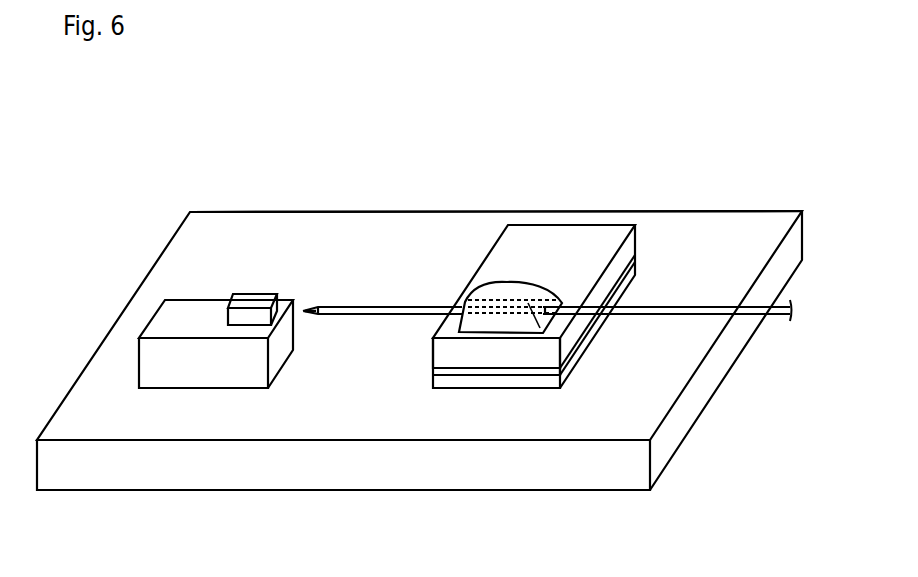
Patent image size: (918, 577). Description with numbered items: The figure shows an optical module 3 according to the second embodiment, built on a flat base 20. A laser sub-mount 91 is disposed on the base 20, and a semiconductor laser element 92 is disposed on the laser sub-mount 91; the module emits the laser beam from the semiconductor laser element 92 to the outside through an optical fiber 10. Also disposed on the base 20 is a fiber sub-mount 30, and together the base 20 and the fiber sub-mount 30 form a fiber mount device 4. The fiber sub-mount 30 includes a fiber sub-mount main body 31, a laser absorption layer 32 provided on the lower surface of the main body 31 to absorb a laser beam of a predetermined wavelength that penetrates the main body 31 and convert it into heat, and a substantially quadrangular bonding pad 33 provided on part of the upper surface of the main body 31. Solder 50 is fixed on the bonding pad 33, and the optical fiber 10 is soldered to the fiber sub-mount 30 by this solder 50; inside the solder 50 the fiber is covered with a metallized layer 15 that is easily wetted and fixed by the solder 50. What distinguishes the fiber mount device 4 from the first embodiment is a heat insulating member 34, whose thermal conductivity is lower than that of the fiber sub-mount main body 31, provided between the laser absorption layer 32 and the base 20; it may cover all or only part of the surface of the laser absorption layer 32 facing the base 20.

The optical module 3 is at (804, 106).
The fiber mount device 4 is at (687, 203).
The optical fiber 10 is at (427, 310).
The metallized layer 15 is at (440, 335).
The base 20 is at (778, 222).
The fiber sub-mount 30 is at (636, 219).
The fiber sub-mount main body 31 is at (588, 237).
The laser absorption layer 32 is at (540, 372).
The bonding pad 33 is at (516, 310).
The heat insulating member 34 is at (450, 385).
The solder 50 is at (487, 292).
The laser sub-mount 91 is at (172, 370).
The semiconductor laser element 92 is at (248, 315).